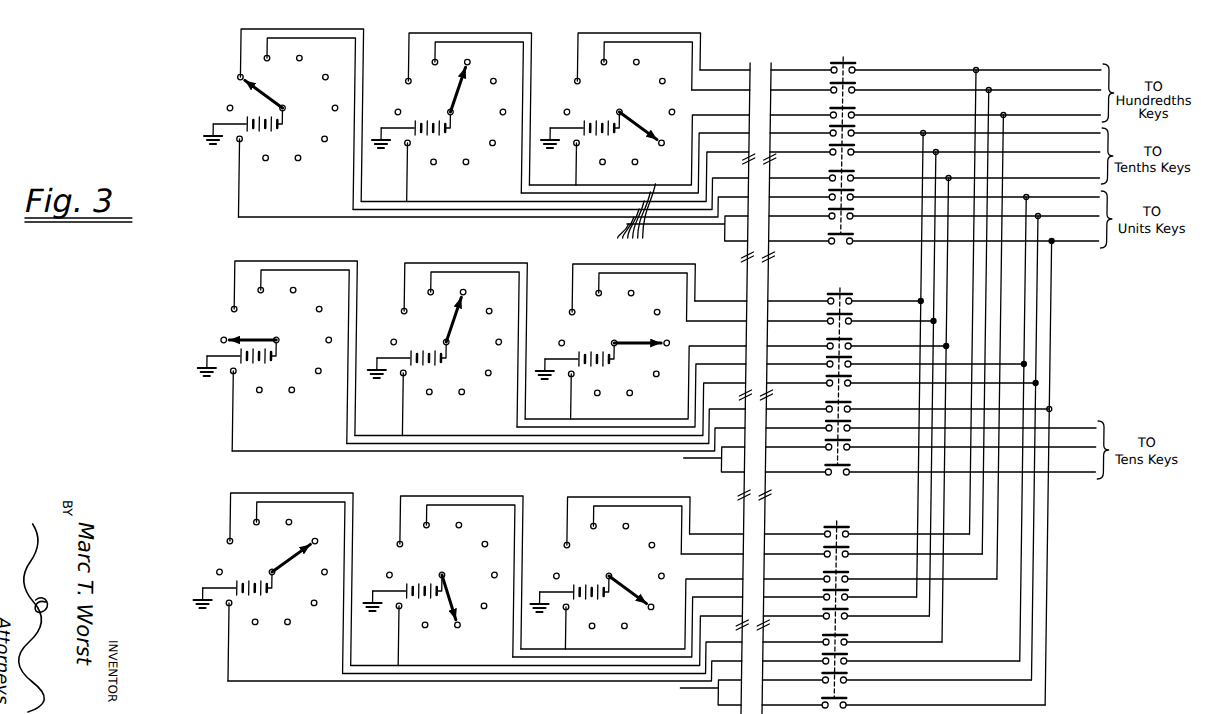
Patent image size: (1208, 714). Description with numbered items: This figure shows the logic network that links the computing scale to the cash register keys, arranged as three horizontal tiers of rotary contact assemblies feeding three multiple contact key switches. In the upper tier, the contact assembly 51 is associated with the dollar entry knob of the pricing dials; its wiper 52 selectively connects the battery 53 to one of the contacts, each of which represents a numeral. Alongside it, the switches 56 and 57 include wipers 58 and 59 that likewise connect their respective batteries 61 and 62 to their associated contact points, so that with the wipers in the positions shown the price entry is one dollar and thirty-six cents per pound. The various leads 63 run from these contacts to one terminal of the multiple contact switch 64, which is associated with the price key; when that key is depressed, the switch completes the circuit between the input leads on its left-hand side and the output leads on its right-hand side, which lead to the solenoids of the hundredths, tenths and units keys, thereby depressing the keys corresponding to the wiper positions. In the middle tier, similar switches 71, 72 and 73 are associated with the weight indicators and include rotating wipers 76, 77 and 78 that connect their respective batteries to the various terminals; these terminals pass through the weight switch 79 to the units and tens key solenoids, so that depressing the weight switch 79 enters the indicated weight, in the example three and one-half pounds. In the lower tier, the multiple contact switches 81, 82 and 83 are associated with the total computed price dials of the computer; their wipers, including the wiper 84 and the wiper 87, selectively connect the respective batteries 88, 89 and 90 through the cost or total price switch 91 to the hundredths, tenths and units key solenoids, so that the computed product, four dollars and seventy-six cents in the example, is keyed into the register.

The contact assembly 51 is at (270, 112).
The wiper 52 is at (230, 94).
The battery 53 is at (259, 128).
The switch 56 is at (451, 106).
The wiper 58 is at (431, 89).
The battery 61 is at (426, 132).
The switch 57 is at (620, 98).
The wiper 59 is at (638, 113).
The battery 62 is at (590, 135).
The leads 63 is at (636, 219).
The multiple contact switch 64 is at (853, 61).
The switch 71 is at (277, 346).
The rotating wiper 76 is at (265, 325).
The switch 72 is at (447, 339).
The rotating wiper 77 is at (468, 323).
The switch 73 is at (615, 332).
The rotating wiper 78 is at (637, 359).
The weight switch 79 is at (857, 292).
The multiple contact switch 81 is at (272, 579).
The wiper 84 is at (281, 557).
The battery 88 is at (247, 594).
The multiple contact switch 82 is at (443, 571).
The battery 89 is at (407, 612).
The multiple contact switch 83 is at (610, 563).
The wiper 87 is at (629, 581).
The battery 90 is at (579, 597).
The cost or total price switch 91 is at (855, 527).